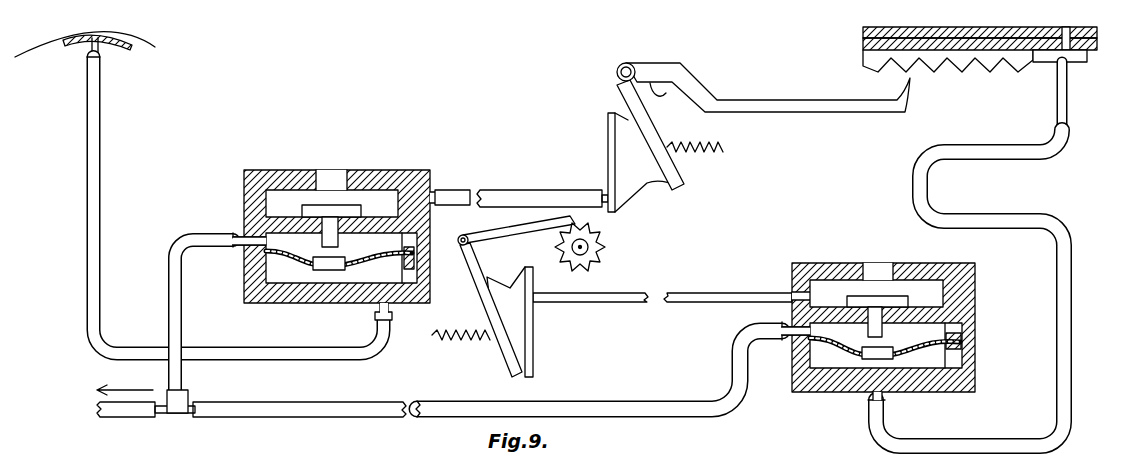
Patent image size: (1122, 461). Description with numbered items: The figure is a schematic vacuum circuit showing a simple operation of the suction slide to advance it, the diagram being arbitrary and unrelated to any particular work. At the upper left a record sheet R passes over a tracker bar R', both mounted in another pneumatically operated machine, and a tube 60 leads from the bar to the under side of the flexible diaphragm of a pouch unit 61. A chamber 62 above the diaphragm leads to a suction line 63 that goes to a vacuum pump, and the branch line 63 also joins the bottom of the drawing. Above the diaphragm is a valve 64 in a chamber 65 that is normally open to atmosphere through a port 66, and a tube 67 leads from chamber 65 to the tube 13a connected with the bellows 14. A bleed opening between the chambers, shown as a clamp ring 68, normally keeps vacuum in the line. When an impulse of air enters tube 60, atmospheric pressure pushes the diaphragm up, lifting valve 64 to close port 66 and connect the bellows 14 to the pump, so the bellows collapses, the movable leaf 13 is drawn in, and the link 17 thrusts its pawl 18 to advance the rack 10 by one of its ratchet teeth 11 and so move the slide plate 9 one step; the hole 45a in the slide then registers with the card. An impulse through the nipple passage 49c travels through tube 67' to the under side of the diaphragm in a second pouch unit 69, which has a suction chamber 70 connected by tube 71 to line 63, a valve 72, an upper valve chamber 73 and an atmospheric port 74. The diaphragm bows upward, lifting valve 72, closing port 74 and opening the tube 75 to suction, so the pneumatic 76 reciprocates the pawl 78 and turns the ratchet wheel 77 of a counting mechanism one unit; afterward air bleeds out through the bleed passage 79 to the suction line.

The slide plate 9 is at (1077, 65).
The rack 10 is at (863, 53).
The ratchet teeth 11 is at (975, 73).
The movable leaf 13 is at (684, 186).
The tube 13a is at (590, 180).
The bellows 14 is at (645, 173).
The link 17 is at (837, 110).
The pawl 18 is at (907, 102).
The hole in slide plate 45a is at (185, 32).
The nipple tube 49c is at (1067, 140).
The tube 60 is at (100, 222).
The pouch unit 61 is at (297, 268).
The chamber 62 is at (278, 245).
The suction line 63 is at (182, 376).
The valve 64 is at (353, 205).
The chamber 65 is at (282, 203).
The port 66 is at (330, 180).
The tube 67 is at (452, 179).
The tube 67' is at (1020, 403).
The diaphragm 68 is at (412, 262).
The pouch unit 69 is at (958, 297).
The suction chamber 70 is at (847, 332).
The tube 71 is at (652, 410).
The valve 72 is at (895, 298).
The upper valve chamber 73 is at (825, 290).
The port 74 is at (872, 270).
The tube 75 is at (713, 292).
The pneumatic 76 is at (532, 327).
The ratchet wheel 77 is at (604, 250).
The pawl 78 is at (515, 232).
The bleed passage 79 is at (958, 340).
The record sheet R is at (93, 58).
The tracker bar R' is at (115, 68).